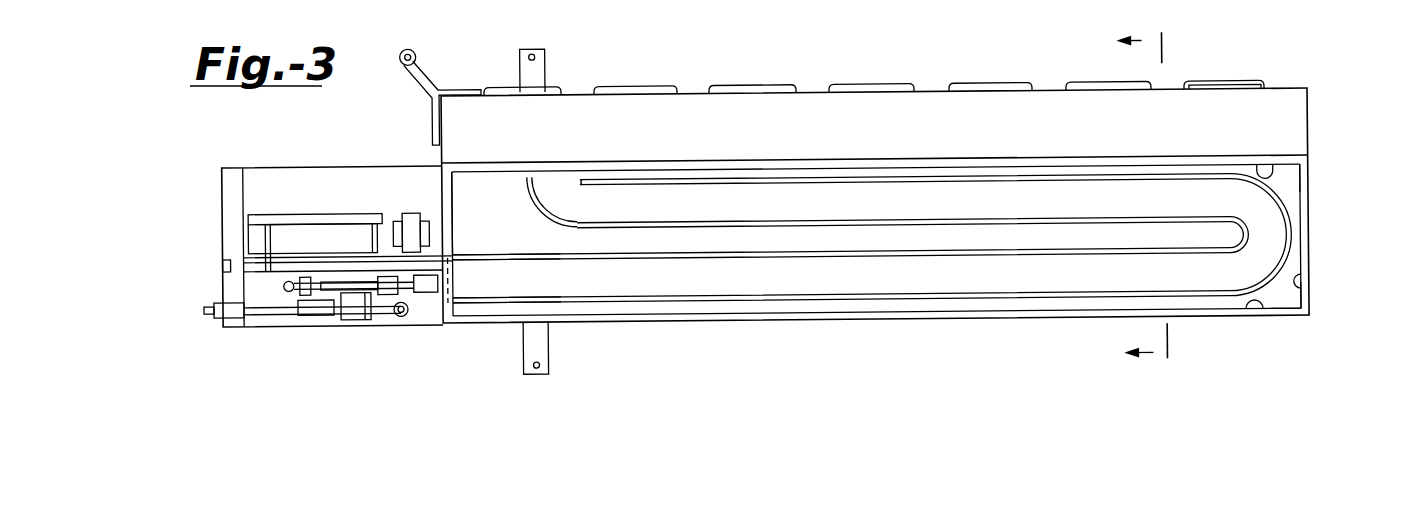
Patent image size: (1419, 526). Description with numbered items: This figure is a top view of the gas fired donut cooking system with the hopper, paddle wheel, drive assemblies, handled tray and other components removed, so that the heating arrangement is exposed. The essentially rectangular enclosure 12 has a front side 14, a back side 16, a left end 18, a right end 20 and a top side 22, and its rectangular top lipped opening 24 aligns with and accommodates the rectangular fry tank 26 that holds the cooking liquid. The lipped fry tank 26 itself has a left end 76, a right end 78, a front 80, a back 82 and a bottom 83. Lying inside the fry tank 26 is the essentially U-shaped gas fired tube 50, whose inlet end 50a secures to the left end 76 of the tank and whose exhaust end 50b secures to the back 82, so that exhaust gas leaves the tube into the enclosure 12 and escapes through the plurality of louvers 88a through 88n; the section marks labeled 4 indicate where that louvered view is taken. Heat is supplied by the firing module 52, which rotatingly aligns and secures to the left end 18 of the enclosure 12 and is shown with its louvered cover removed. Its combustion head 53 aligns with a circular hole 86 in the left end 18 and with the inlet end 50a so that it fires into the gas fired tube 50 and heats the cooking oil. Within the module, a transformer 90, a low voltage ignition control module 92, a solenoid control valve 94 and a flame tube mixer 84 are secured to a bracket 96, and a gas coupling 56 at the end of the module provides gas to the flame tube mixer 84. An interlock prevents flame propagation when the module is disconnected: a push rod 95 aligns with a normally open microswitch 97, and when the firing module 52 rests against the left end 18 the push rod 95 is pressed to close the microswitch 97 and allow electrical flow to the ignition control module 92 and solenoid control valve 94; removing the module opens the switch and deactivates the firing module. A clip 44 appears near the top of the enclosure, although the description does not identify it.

The enclosure 12 is at (1310, 126).
The front side 14 is at (878, 324).
The back side 16 is at (887, 91).
The left end 18 is at (440, 190).
The right end 20 is at (1308, 243).
The top side 22 is at (1060, 144).
The top lipped opening 24 is at (1275, 301).
The fry tank 26 is at (1306, 213).
The mounting clip 44 is at (416, 52).
The gas fired tube 50 is at (916, 271).
The inlet end 50a is at (458, 284).
The exhaust end 50b is at (523, 188).
The firing module 52 is at (327, 341).
The combustion head 53 is at (423, 293).
The gas coupling 56 is at (203, 316).
The left end 76 is at (453, 247).
The right end 78 is at (1302, 294).
The front 80 is at (1252, 309).
The back 82 is at (1265, 178).
The bottom 83 is at (1295, 188).
The flame tube mixer 84 is at (363, 290).
The circular hole 86 is at (450, 275).
The louver 88a is at (552, 89).
The louver 88n is at (1196, 89).
The transformer 90 is at (407, 214).
The low voltage ignition control module 92 is at (282, 215).
The solenoid control valve 94 is at (352, 318).
The push rod 95 is at (323, 253).
The bracket 96 is at (260, 253).
The normally open microswitch 97 is at (220, 270).
The section line 4 is at (1135, 195).